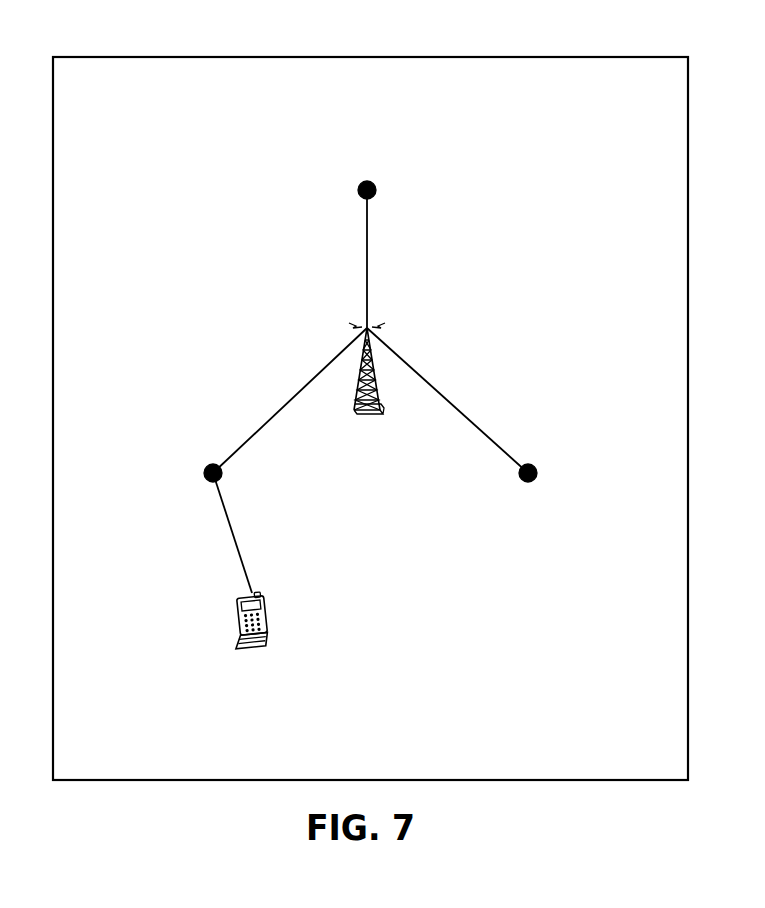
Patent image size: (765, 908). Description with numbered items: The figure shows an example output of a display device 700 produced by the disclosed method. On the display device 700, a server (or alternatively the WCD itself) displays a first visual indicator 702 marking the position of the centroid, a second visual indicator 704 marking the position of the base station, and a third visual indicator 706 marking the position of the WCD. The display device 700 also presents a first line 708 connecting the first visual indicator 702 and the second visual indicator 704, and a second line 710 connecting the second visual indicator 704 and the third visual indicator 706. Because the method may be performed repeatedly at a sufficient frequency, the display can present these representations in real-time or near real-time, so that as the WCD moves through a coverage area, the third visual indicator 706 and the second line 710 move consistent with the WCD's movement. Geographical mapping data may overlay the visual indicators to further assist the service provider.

The display device 700 is at (653, 57).
The first visual indicator 702 is at (222, 475).
The second visual indicator 704 is at (378, 412).
The third visual indicator 706 is at (268, 620).
The first line 708 is at (283, 405).
The second line 710 is at (238, 547).